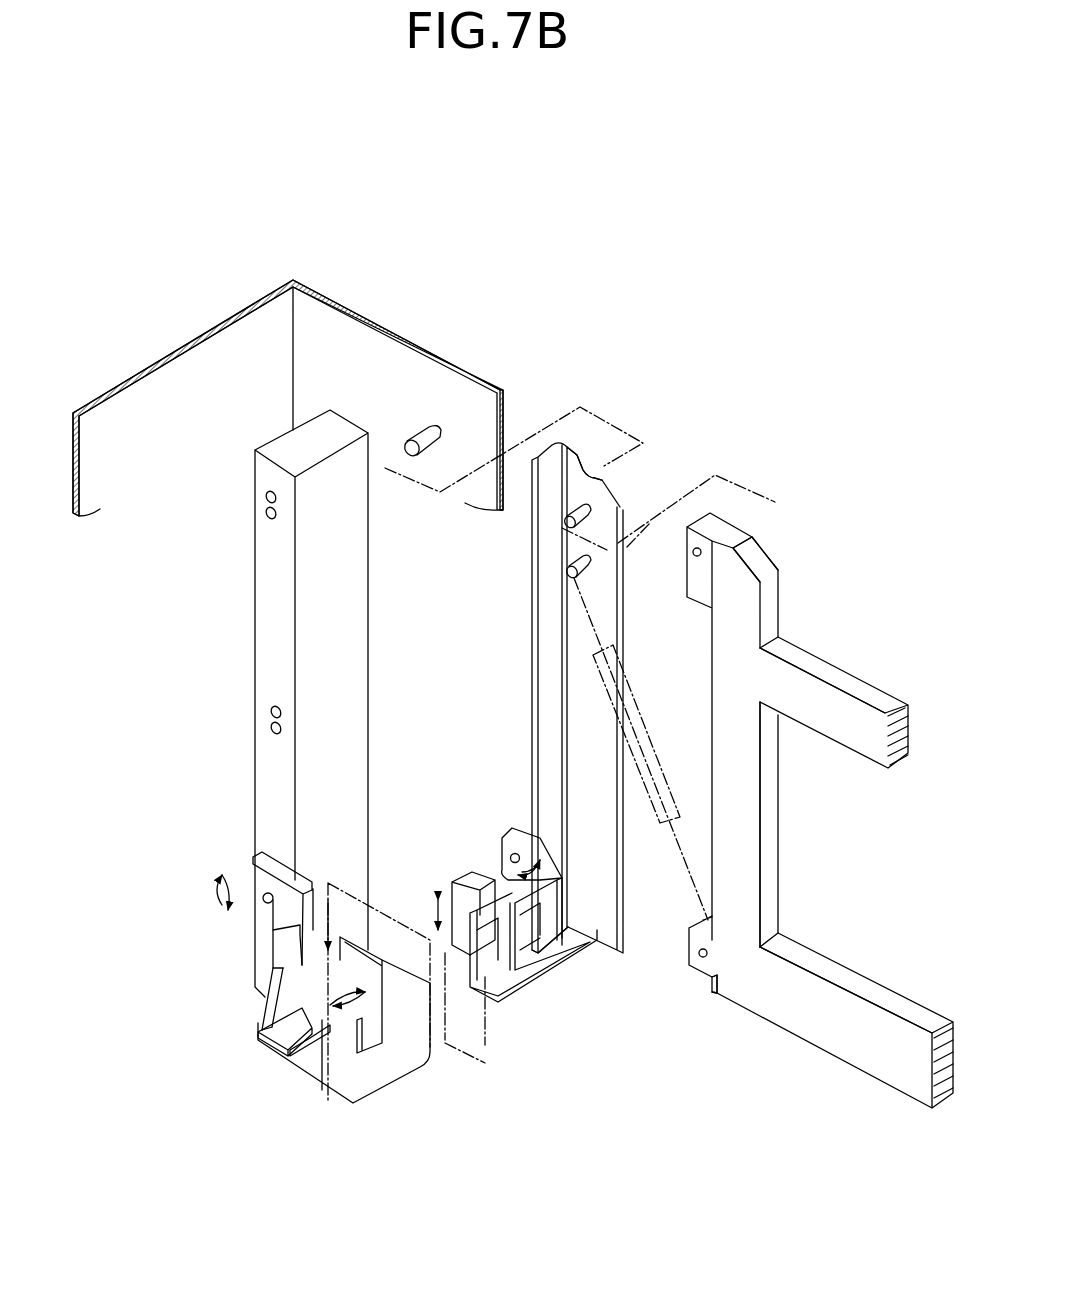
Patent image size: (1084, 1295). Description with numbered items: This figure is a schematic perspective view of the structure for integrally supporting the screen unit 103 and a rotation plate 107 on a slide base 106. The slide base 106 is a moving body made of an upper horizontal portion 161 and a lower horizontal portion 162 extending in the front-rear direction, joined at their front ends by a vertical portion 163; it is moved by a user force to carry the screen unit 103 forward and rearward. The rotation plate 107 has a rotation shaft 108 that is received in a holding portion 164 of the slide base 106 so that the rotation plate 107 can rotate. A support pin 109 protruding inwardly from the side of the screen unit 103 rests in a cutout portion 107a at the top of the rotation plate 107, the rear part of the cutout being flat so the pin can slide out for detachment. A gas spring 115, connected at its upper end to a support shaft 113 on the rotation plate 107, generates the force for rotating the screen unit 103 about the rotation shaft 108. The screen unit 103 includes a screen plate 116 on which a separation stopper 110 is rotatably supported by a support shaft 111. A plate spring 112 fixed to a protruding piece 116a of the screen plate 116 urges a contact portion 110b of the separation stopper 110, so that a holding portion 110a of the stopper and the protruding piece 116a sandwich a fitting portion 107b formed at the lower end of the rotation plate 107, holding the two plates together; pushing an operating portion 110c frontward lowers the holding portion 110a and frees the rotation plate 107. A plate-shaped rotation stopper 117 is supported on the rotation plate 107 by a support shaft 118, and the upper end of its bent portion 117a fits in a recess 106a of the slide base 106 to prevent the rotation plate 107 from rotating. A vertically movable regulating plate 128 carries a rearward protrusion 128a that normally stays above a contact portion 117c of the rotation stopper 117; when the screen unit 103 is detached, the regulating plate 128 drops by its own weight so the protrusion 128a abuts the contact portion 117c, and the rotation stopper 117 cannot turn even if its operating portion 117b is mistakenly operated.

The screen unit 103 is at (370, 318).
The support pin 109 is at (437, 432).
The screen plate 116 is at (255, 598).
The protruding piece 116a is at (272, 975).
The support shaft 111 is at (253, 857).
The separation stopper 110 is at (258, 953).
The holding portion 110a is at (323, 990).
The contact portion 110b is at (282, 1035).
The operating portion 110c is at (370, 1035).
The plate spring 112 is at (268, 1022).
The regulating plate 128 is at (455, 880).
The protrusion 128a is at (475, 870).
The rotation stopper 117 is at (505, 893).
The bent portion 117a is at (545, 905).
The operating portion 117b is at (497, 990).
The contact portion 117c is at (530, 965).
The support shaft 118 is at (510, 828).
The rotation plate 107 is at (570, 622).
The cutout portion 107a is at (598, 466).
The fitting portion 107b is at (533, 968).
The rotation shaft 108 is at (590, 508).
The support shaft 113 is at (568, 572).
The gas spring 115 is at (645, 722).
The slide base 106 is at (800, 605).
The holding portion 164 is at (750, 527).
The upper horizontal portion 161 is at (840, 677).
The vertical portion 163 is at (780, 837).
The lower horizontal portion 162 is at (817, 957).
The recess 106a is at (714, 992).